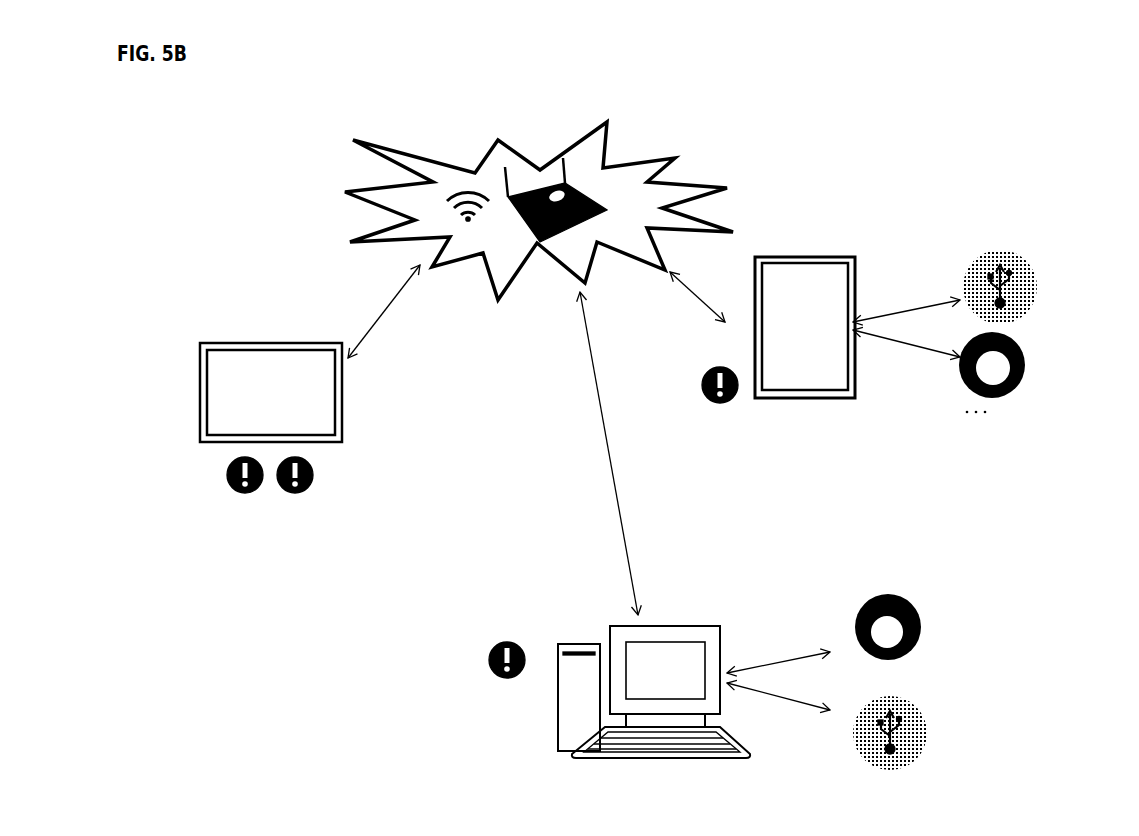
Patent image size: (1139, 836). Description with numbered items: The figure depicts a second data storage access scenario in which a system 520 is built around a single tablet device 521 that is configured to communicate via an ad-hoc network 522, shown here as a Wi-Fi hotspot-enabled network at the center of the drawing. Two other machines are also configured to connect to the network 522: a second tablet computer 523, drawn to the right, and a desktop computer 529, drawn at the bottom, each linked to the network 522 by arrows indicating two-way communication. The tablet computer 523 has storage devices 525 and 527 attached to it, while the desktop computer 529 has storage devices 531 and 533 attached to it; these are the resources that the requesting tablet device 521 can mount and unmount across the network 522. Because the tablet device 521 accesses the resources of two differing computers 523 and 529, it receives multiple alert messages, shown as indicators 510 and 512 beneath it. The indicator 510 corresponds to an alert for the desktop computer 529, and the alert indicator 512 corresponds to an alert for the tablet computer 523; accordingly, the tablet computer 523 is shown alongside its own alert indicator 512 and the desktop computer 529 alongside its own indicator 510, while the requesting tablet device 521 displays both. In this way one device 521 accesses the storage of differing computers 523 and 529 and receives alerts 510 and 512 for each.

The system 520 is at (162, 86).
The indicator 510 is at (220, 477).
The alert indicator 512 is at (322, 475).
The tablet device 521 is at (348, 422).
The ad-hoc network 522 is at (710, 180).
The tablet computer 523 is at (803, 255).
The storage device 525 is at (1040, 278).
The storage device 527 is at (1040, 370).
The desktop computer 529 is at (703, 625).
The storage device 531 is at (930, 630).
The storage device 533 is at (930, 723).